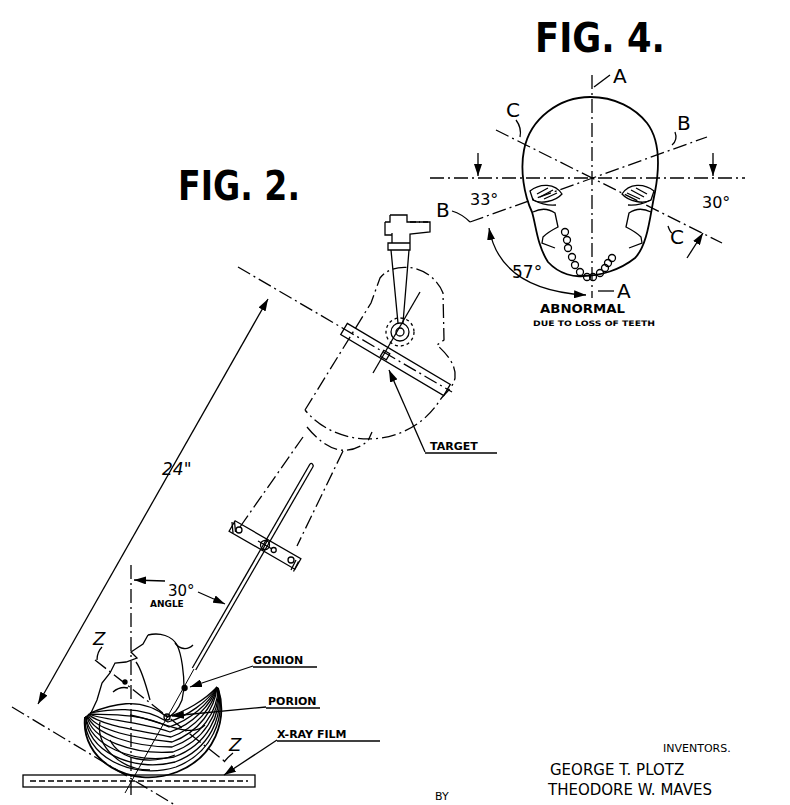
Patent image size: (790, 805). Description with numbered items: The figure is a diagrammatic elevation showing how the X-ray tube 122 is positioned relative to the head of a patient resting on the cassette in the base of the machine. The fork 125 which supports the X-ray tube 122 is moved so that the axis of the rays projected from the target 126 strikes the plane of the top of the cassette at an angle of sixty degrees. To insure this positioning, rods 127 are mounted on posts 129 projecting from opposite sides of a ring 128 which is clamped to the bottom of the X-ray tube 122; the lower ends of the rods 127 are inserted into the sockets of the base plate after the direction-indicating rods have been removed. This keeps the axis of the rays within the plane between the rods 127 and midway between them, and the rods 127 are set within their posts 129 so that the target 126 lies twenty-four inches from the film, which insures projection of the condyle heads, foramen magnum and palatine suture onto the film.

The X-ray tube 122 is at (302, 514).
The fork 125 is at (396, 272).
The target 126 is at (422, 379).
The rods 127 is at (244, 576).
The ring 128 is at (231, 530).
The posts 129 is at (258, 540).